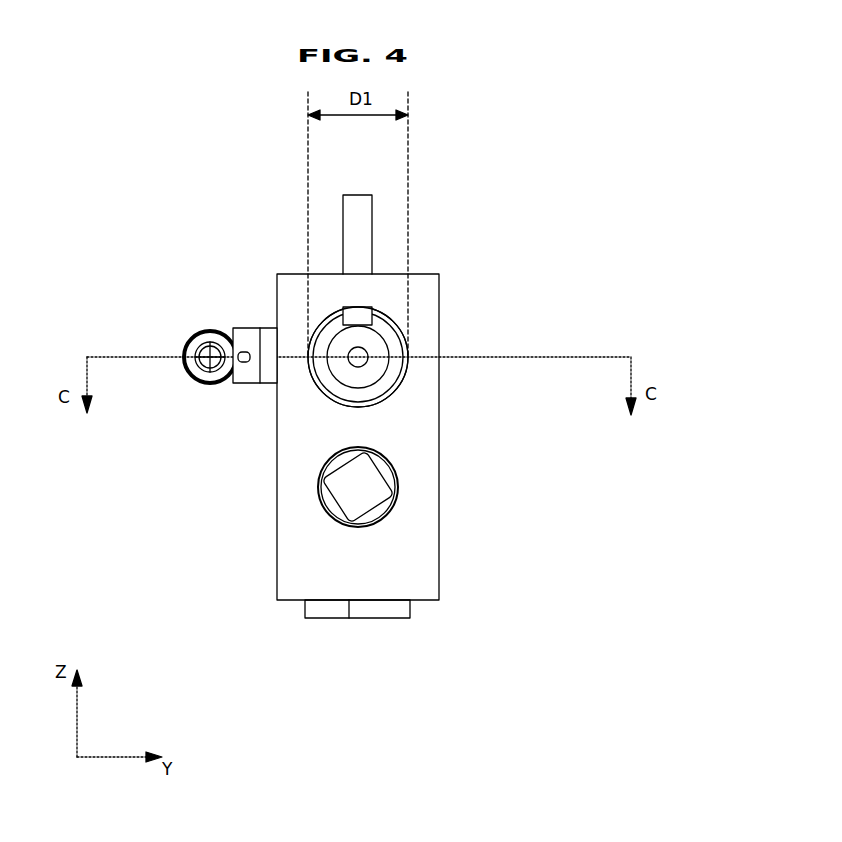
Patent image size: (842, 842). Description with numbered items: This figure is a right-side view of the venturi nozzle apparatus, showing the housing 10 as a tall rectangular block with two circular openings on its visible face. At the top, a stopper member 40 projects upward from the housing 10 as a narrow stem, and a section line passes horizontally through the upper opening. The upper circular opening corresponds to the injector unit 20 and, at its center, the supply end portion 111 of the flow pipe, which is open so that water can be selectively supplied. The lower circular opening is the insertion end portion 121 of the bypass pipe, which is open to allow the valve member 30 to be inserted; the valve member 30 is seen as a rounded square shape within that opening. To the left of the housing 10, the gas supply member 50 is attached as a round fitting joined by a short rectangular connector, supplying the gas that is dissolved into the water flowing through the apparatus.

The housing 10 is at (418, 322).
The injector unit 20 is at (330, 327).
The valve member 30 is at (342, 483).
The stopper member 40 is at (357, 230).
The gas supply member 50 is at (203, 331).
The supply end portion 111 is at (400, 376).
The insertion end portion 121 is at (398, 485).